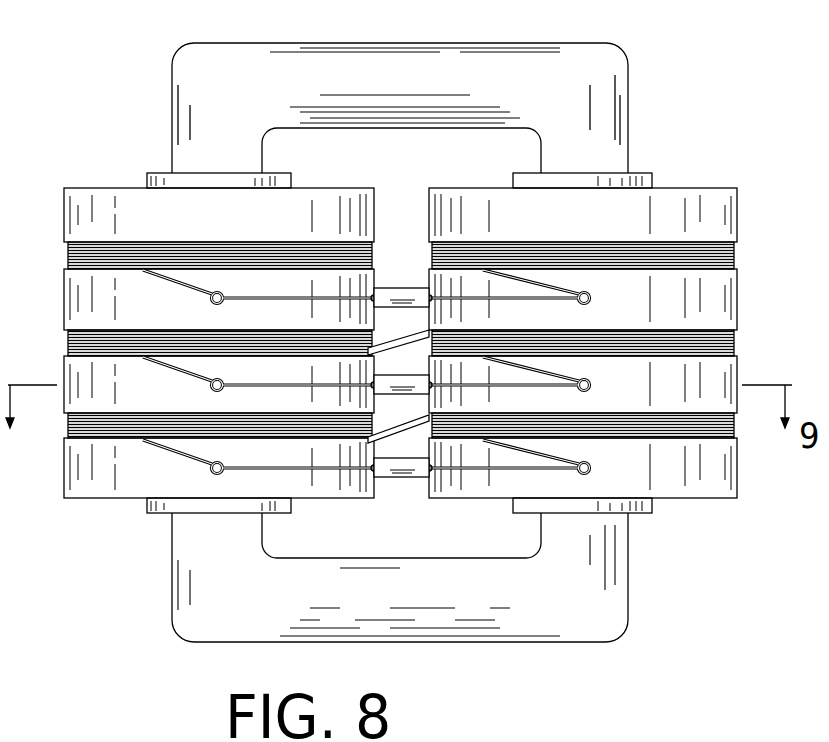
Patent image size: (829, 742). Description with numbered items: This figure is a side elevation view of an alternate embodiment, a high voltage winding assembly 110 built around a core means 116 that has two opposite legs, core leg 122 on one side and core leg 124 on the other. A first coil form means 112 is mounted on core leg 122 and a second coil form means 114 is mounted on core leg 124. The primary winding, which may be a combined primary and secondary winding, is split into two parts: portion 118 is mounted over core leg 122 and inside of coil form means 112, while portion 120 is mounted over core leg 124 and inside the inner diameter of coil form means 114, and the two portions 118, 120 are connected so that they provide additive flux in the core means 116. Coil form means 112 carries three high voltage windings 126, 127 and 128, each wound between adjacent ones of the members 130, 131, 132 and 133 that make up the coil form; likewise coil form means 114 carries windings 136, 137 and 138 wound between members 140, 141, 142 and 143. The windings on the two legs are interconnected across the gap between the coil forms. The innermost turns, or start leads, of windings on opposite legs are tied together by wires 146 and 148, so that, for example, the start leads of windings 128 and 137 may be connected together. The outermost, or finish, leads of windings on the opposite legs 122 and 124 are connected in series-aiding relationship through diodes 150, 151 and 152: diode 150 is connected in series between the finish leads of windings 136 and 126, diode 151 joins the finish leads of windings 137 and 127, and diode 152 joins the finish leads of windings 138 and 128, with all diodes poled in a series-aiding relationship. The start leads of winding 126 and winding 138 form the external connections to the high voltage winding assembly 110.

The high voltage winding assembly 110 is at (82, 96).
The first coil form means 112 is at (95, 188).
The second coil form means 114 is at (725, 188).
The core means 116 is at (533, 642).
The primary winding portion 118 is at (280, 173).
The primary winding portion 120 is at (638, 173).
The core leg 122 is at (172, 108).
The core leg 124 is at (628, 128).
The winding 126 is at (68, 250).
The winding 127 is at (68, 340).
The winding 128 is at (64, 437).
The member 130 is at (64, 203).
The member 131 is at (64, 290).
The member 132 is at (64, 368).
The member 133 is at (64, 490).
The winding 136 is at (734, 250).
The winding 137 is at (734, 337).
The winding 138 is at (734, 430).
The member 140 is at (737, 200).
The member 141 is at (614, 297).
The member 142 is at (737, 368).
The member 143 is at (737, 500).
The wire 146 is at (428, 334).
The wire 148 is at (420, 418).
The diode 150 is at (406, 287).
The diode 151 is at (410, 372).
The diode 152 is at (395, 478).